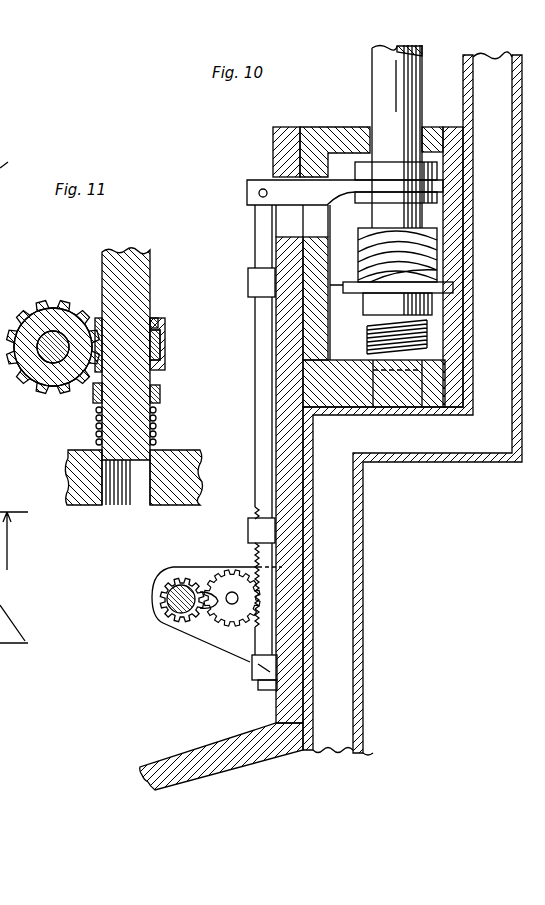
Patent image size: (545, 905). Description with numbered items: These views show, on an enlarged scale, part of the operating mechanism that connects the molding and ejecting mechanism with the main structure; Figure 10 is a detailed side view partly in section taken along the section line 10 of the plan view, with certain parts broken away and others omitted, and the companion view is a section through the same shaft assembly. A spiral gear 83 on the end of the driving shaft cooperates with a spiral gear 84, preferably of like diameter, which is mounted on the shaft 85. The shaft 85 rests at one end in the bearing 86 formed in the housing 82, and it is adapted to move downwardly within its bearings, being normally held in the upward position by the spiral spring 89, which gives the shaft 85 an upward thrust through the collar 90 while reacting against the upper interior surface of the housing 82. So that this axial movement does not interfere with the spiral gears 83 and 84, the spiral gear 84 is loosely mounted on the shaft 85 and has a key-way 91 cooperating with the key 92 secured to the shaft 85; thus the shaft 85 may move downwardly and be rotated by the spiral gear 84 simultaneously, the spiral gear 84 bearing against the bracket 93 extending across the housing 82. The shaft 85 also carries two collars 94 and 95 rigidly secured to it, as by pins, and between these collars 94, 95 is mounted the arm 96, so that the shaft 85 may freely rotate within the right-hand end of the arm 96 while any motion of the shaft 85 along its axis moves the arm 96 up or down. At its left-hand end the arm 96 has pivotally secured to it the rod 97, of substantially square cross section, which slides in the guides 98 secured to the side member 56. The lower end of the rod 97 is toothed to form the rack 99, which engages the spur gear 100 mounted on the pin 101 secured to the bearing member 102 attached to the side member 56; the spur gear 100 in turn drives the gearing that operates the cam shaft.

In FIG. 11, the section line 10 is at (14, 577).
In FIG. 10, the side member 56 is at (298, 560).
In FIG. 10, the housing 82 is at (349, 368).
In FIG. 11, the spiral gear 83 is at (26, 362).
In FIG. 10, the spiral gear 84 is at (433, 258).
In FIG. 11, the spiral gear 84 is at (165, 326).
In FIG. 10, the shaft 85 is at (382, 102).
In FIG. 11, the shaft 85 is at (108, 287).
In FIG. 11, the bearing 86 is at (180, 462).
In FIG. 10, the spiral spring 89 is at (427, 343).
In FIG. 11, the spiral spring 89 is at (157, 427).
In FIG. 11, the collar 90 is at (158, 390).
In FIG. 11, the key-way 91 is at (160, 348).
In FIG. 11, the key 92 is at (158, 323).
In FIG. 10, the bracket 93 is at (338, 292).
In FIG. 10, the collar 94 is at (433, 165).
In FIG. 10, the collar 95 is at (433, 206).
In FIG. 10, the arm 96 is at (268, 190).
In FIG. 10, the rod 97 is at (256, 445).
In FIG. 10, the guides 98 is at (250, 283).
In FIG. 10, the rack 99 is at (256, 556).
In FIG. 10, the spur gear 100 is at (232, 618).
In FIG. 10, the pin 101 is at (229, 604).
In FIG. 10, the bearing member 102 is at (163, 625).